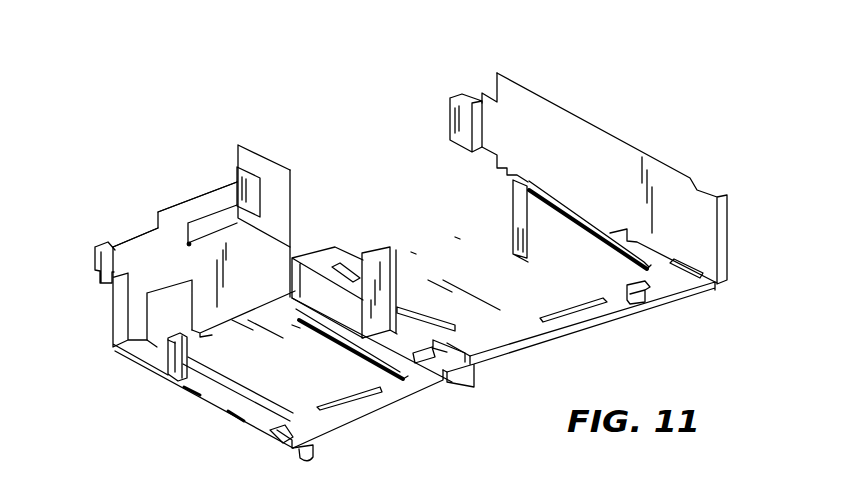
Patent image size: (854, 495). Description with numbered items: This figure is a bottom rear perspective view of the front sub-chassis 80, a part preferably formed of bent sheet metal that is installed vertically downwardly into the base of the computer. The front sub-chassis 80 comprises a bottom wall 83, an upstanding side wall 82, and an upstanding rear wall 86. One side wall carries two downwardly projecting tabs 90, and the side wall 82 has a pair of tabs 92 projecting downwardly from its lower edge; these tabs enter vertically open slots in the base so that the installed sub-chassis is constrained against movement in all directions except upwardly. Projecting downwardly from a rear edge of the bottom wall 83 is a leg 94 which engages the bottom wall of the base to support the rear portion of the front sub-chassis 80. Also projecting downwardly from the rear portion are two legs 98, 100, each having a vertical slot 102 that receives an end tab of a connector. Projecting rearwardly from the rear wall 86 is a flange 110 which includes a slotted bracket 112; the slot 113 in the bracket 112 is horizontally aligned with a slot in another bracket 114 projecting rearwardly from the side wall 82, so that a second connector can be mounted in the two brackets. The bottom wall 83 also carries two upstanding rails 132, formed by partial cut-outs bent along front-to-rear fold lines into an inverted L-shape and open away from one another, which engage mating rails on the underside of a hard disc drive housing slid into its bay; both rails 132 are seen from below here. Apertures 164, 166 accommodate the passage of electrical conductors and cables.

The front sub-chassis 80 is at (190, 192).
The side wall 82 is at (677, 178).
The bottom wall 83 is at (510, 355).
The rear wall 86 is at (227, 198).
The tabs 90 is at (97, 282).
The tabs 92 is at (508, 185).
The leg 94 is at (393, 255).
The leg 98 is at (165, 379).
The leg 100 is at (560, 192).
The vertical slot 102 is at (188, 360).
The flange 110 is at (265, 167).
The slotted bracket 112 is at (252, 190).
The slot 113 is at (242, 180).
The bracket 114 is at (467, 107).
The upstanding rails 132 is at (252, 385).
The aperture 164 is at (188, 243).
The aperture 166 is at (165, 320).